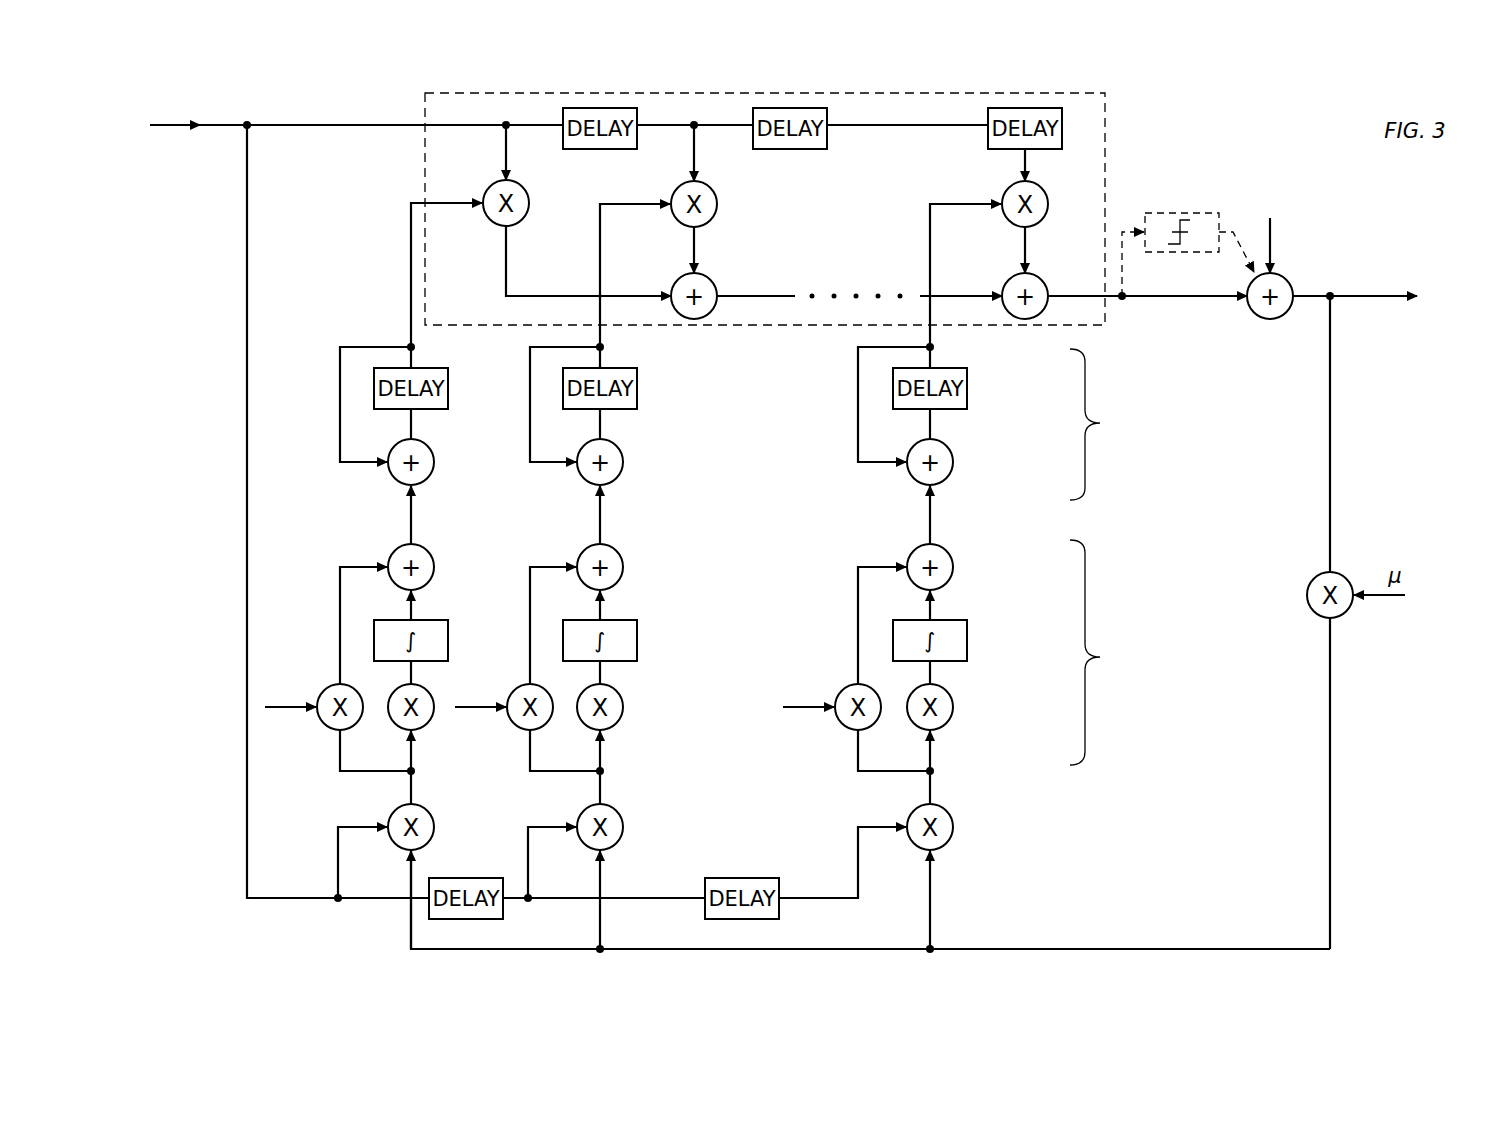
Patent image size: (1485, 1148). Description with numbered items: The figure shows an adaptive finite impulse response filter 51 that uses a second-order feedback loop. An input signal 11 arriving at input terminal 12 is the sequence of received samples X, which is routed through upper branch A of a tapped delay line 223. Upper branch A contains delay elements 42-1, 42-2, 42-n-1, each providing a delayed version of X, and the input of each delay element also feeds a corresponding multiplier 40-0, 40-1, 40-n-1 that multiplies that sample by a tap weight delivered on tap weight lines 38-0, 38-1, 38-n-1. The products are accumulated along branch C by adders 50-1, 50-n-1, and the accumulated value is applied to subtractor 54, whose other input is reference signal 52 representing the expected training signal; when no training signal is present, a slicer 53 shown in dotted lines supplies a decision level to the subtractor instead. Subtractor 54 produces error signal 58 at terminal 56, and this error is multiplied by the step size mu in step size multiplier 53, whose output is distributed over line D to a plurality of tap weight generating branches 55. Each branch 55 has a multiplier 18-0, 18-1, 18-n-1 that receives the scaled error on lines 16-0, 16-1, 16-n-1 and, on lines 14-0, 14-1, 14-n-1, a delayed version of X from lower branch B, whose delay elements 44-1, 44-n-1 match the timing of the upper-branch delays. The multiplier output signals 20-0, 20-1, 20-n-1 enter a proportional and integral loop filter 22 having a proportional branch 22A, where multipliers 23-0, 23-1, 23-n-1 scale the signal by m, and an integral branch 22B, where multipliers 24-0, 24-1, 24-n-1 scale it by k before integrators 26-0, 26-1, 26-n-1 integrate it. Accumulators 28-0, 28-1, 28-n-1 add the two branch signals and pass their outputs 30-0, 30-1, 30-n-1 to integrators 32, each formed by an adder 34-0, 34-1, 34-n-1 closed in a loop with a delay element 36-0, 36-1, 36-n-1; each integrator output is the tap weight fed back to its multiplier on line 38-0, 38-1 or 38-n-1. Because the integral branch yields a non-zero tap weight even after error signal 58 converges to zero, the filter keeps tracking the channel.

The input signal 11 is at (198, 111).
The input terminal 12 is at (225, 130).
The tapped delay line 223 is at (425, 155).
The multiplier 40-0 is at (490, 186).
The multiplier 40-1 is at (718, 204).
The multiplier 40-n-1 is at (1010, 220).
The delay element 42-1 is at (563, 112).
The delay element 42-2 is at (752, 112).
The delay element 42-n-1 is at (988, 112).
The adder 50-1 is at (678, 276).
The adder 50-n-1 is at (1045, 275).
The coefficient signal line 38-0 is at (411, 262).
The coefficient signal line 38-1 is at (600, 308).
The coefficient signal line 38-n-1 is at (934, 346).
The delay element 36-0 is at (442, 368).
The delay element 36-1 is at (630, 368).
The delay element 36-n-1 is at (968, 390).
The adder 34-0 is at (394, 480).
The adder 34-1 is at (618, 452).
The adder 34-n-1 is at (954, 464).
The signal line 30-0 is at (411, 516).
The signal line 30-1 is at (600, 516).
The signal line 30-n-1 is at (932, 522).
The accumulator 28-0 is at (434, 576).
The accumulator 28-1 is at (623, 576).
The accumulator 28-n-1 is at (954, 572).
The integrator 26-0 is at (448, 632).
The integrator 26-1 is at (637, 640).
The integrator 26-n-1 is at (967, 640).
The proportional branch 22A is at (340, 608).
The integral branch 22B is at (411, 750).
The proportional and integral loop filter 22 is at (1134, 652).
The multiplier 23-0 is at (324, 698).
The multiplier 23-1 is at (551, 704).
The multiplier 23-n-1 is at (841, 699).
The multiplier 24-0 is at (426, 724).
The multiplier 24-1 is at (623, 708).
The multiplier 24-n-1 is at (953, 708).
The output signal 20-0 is at (411, 786).
The output signal 20-1 is at (602, 790).
The output signal 20-n-1 is at (932, 790).
The multiplier 18-0 is at (428, 810).
The multiplier 18-1 is at (623, 828).
The multiplier 18-n-1 is at (953, 826).
The signal line 14-0 is at (338, 845).
The signal line 14-1 is at (528, 856).
The signal line 14-n-1 is at (858, 856).
The error signal line 16-0 is at (407, 890).
The error signal line 16-1 is at (597, 890).
The error signal line 16-n-1 is at (932, 900).
The delay element 44-1 is at (503, 918).
The delay element 44-n-1 is at (780, 918).
The tap weight generating branch 55 is at (447, 434).
The step size multiplier 53 is at (1166, 213).
The reference signal 52 is at (1270, 201).
The subtractor 54 is at (1270, 320).
The terminal 56 is at (1355, 300).
The error signal 58 is at (1355, 251).
The integrator 32 is at (1159, 424).
The adaptive filter 51 is at (1372, 763).
The upper branch A is at (902, 126).
The input line B is at (247, 510).
The branch C is at (748, 296).
The error feedback line D is at (1168, 949).